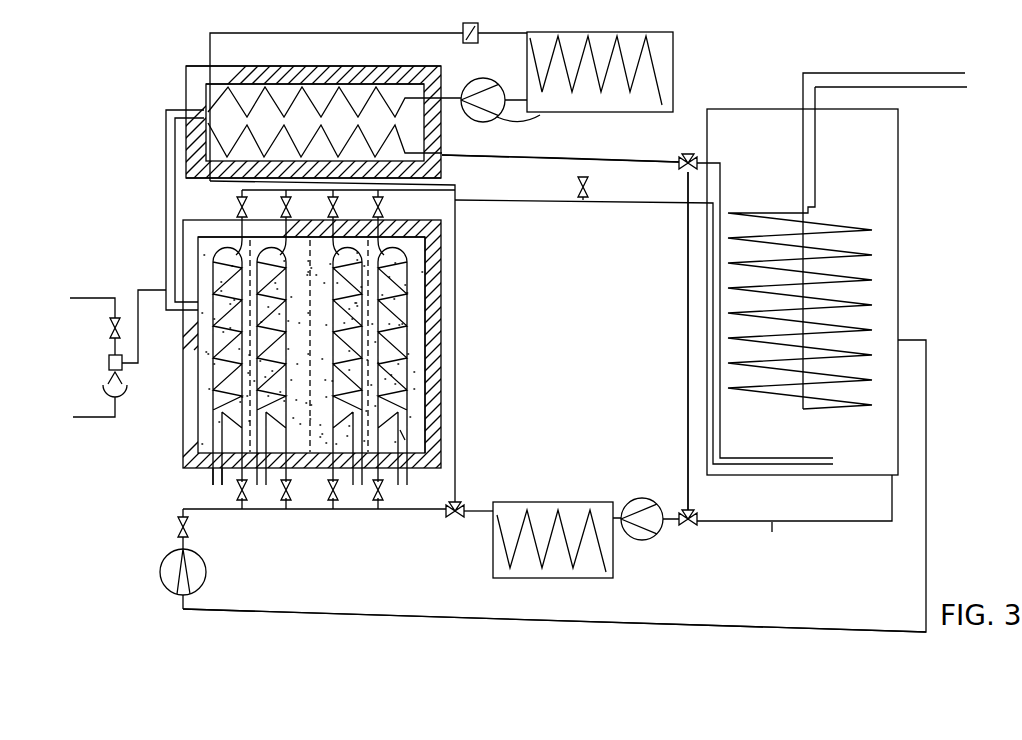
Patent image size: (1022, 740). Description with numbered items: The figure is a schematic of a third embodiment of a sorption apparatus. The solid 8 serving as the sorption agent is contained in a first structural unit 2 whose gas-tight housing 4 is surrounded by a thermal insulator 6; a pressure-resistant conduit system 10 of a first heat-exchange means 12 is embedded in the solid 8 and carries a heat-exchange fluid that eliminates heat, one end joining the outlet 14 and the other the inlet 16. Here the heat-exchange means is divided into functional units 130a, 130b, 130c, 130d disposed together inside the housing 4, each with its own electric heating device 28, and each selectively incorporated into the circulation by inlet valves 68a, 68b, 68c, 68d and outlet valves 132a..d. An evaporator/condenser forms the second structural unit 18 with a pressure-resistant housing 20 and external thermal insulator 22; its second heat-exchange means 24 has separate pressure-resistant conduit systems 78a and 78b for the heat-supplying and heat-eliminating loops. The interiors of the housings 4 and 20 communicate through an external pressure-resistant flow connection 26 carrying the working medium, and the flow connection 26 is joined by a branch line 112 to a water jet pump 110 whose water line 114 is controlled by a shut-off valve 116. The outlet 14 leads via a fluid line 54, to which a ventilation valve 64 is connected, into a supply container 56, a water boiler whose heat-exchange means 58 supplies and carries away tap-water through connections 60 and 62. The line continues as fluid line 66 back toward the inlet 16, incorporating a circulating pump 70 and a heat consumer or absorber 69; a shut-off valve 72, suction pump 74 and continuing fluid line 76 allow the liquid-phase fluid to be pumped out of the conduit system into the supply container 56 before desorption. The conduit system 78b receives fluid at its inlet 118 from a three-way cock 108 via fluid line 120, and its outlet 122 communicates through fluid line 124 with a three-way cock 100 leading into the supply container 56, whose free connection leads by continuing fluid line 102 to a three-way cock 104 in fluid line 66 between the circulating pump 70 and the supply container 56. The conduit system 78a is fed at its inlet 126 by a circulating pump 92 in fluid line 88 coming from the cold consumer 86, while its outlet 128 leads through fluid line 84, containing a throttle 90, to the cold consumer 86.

The first structural unit 2 is at (447, 238).
The gas-tight housing 4 is at (440, 272).
The thermal insulator 6 is at (440, 297).
The solid 8 is at (432, 318).
The pressure-resistant conduit system 10 is at (430, 352).
The first heat-exchange means 12 is at (426, 378).
The outlet 14 is at (390, 229).
The inlet 16 is at (390, 512).
The second structural unit 18 is at (426, 66).
The pressure-resistant housing 20 is at (447, 134).
The external thermal insulator 22 is at (362, 72).
The second heat-exchange means 24 is at (311, 92).
The external pressure-resistant flow connection 26 is at (166, 210).
The electric heating device 28 is at (212, 480).
The fluid line 54 is at (537, 198).
The supply container 56 is at (906, 187).
The heat-exchange means 58 is at (870, 248).
The connection 60 is at (903, 73).
The connection 62 is at (905, 90).
The ventilation valve 64 is at (591, 184).
The fluid line 66 is at (554, 486).
The inlet valve 68a is at (238, 497).
The inlet valve 68b is at (282, 496).
The inlet valve 68c is at (328, 499).
The inlet valve 68d is at (372, 496).
The heat consumer or absorber 69 is at (541, 500).
The circulating pump 70 is at (648, 540).
The shut-off valve 72 is at (163, 529).
The suction pump 74 is at (207, 573).
The continuing fluid line 76 is at (622, 622).
The pressure-resistant conduit system 78a is at (290, 78).
The pressure-resistant conduit system 78b is at (316, 203).
The fluid line 84 is at (368, 33).
The cold consumer 86 is at (600, 31).
The fluid line 88 is at (508, 142).
The throttle 90 is at (476, 25).
The circulating pump 92 is at (518, 132).
The three-way cock 100 is at (685, 153).
The continuing fluid line 102 is at (686, 330).
The three-way cock 104 is at (694, 528).
The three-way cock 108 is at (466, 530).
The water jet pump 110 is at (108, 363).
The branch line 112 is at (138, 340).
The water line 114 is at (93, 298).
The shut-off valve 116 is at (108, 327).
The inlet 118 is at (175, 168).
The fluid line 120 is at (462, 205).
The outlet 122 is at (443, 173).
The fluid line 124 is at (585, 158).
The inlet 126 is at (445, 80).
The outlet 128 is at (262, 72).
The functional unit 130a is at (205, 428).
The functional unit 130b is at (294, 434).
The functional unit 130c is at (339, 436).
The functional unit 130d is at (411, 436).
The outlet valves 132a..d is at (238, 214).